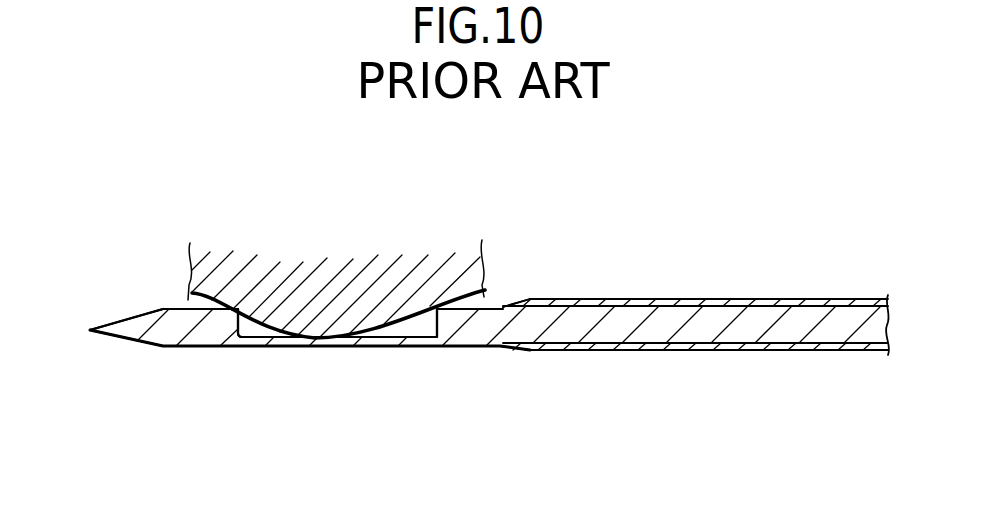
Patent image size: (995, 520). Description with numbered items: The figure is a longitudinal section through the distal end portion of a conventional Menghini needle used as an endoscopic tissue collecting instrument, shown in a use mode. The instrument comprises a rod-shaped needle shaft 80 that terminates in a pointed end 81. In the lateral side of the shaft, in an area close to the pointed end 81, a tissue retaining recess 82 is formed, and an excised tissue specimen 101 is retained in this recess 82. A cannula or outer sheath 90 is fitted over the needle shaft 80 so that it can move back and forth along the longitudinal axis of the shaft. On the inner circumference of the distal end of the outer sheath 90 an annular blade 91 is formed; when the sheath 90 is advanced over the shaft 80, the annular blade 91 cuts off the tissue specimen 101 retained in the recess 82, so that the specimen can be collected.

The needle shaft 80 is at (461, 348).
The pointed end 81 is at (128, 341).
The tissue retaining recess 82 is at (245, 347).
The cannula or outer sheath 90 is at (677, 299).
The annular blade 91 is at (507, 292).
The excised tissue specimen 101 is at (338, 285).